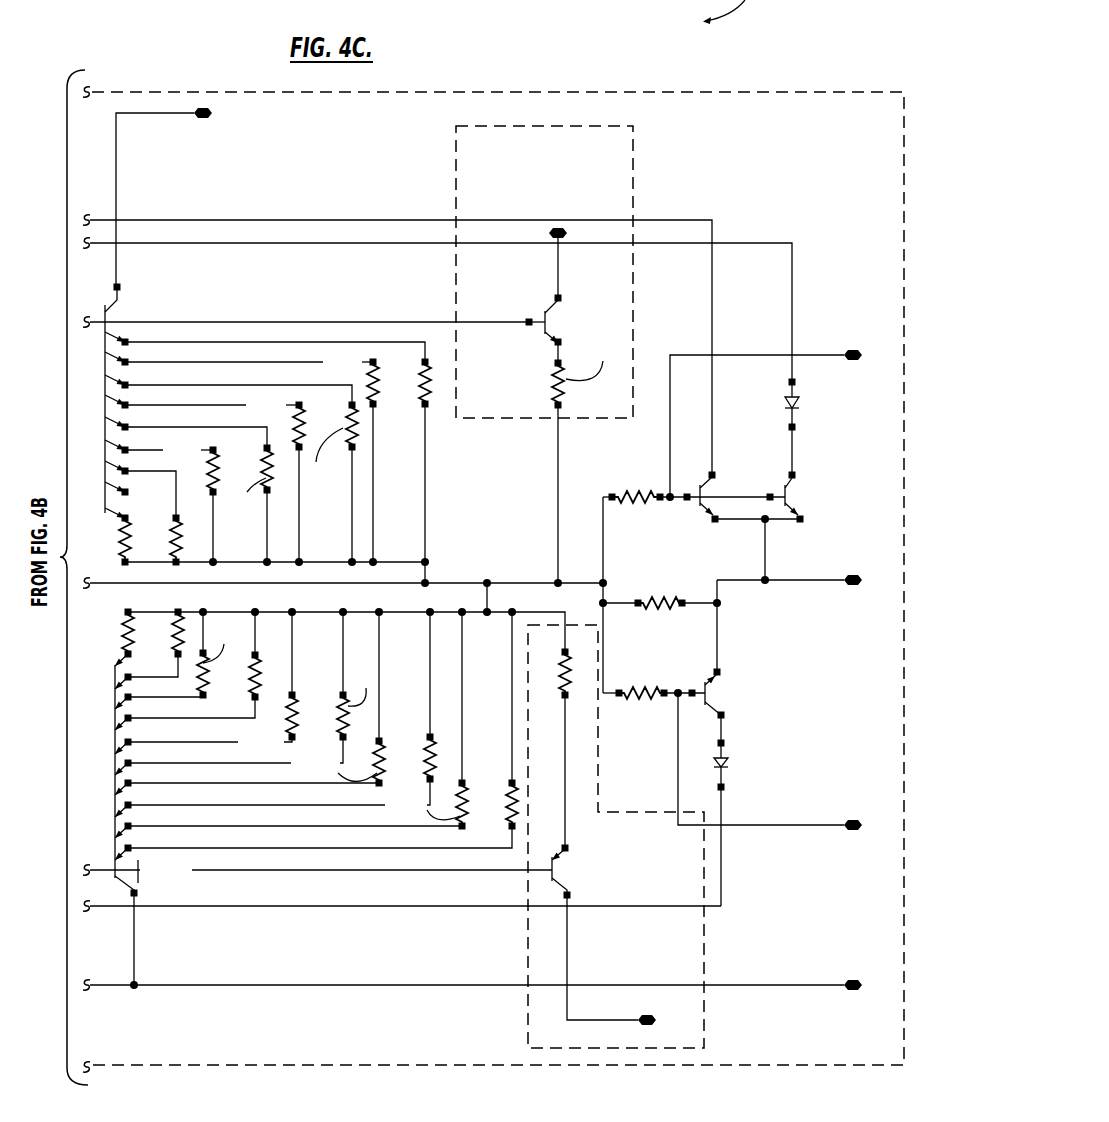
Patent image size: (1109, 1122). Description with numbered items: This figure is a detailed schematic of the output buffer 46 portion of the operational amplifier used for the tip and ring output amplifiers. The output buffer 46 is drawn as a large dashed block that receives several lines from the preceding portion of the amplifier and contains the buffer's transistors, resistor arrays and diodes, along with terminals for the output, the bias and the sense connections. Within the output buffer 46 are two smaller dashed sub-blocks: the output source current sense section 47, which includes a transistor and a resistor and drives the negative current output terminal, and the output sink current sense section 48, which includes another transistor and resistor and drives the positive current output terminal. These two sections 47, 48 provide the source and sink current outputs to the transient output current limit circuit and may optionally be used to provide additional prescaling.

The output buffer 46 is at (506, 88).
The output source current sense section 47 is at (638, 134).
The output sink current sense section 48 is at (710, 1032).